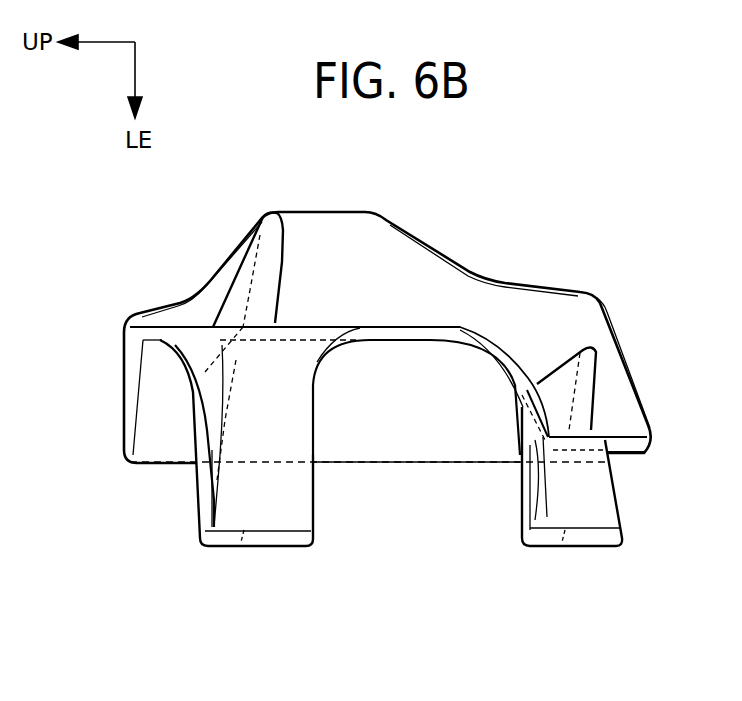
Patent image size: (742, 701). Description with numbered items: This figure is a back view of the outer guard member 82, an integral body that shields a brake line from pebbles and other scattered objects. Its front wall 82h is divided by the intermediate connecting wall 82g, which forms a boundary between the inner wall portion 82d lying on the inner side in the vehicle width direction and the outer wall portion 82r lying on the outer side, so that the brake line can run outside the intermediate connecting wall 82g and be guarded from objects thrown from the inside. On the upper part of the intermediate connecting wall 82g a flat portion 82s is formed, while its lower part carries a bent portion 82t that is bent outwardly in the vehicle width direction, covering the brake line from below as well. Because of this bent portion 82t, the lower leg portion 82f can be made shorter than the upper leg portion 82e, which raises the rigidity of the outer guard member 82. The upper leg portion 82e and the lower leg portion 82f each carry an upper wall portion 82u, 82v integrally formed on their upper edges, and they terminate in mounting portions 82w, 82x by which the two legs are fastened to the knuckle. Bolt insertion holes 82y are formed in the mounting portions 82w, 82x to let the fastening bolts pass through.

The outer guard member 82 is at (167, 272).
The flat portion 82s is at (190, 325).
The intermediate connecting wall 82g is at (316, 326).
The inner wall portion 82d is at (407, 250).
The front wall 82h is at (482, 278).
The bent portion 82t is at (513, 367).
The upper wall portion 82u is at (200, 447).
The upper leg portion 82e is at (200, 506).
The mounting portion 82w is at (228, 547).
The bolt insertion hole 82y is at (272, 532).
The outer wall portion 82r is at (382, 445).
The upper wall portion 82v is at (525, 489).
The lower leg portion 82f is at (612, 497).
The mounting portion 82x is at (545, 546).